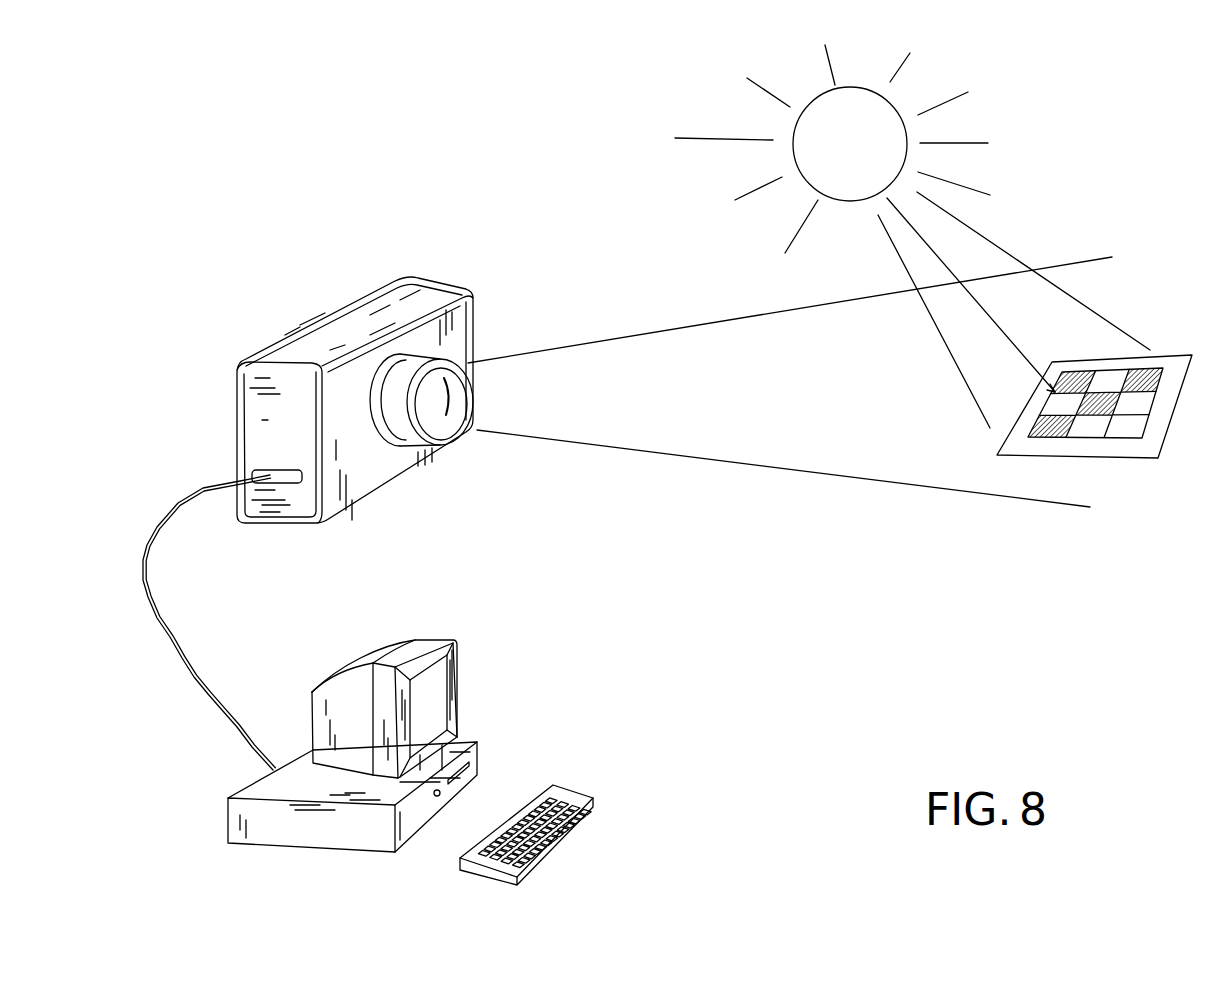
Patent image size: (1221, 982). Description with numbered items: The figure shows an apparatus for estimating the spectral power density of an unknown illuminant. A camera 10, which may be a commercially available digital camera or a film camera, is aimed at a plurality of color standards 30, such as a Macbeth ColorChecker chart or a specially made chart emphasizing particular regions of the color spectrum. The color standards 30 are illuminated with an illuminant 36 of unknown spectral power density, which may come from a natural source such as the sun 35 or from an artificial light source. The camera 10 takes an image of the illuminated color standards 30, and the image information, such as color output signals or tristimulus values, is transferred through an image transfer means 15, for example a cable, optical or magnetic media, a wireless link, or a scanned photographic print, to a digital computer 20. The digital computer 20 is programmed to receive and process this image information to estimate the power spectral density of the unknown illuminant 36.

The camera 10 is at (347, 303).
The image transfer means 15 is at (192, 673).
The digital computer 20 is at (463, 740).
The plurality of color standards 30 is at (1142, 455).
The sun 35 is at (813, 140).
The illuminant 36 is at (1103, 315).